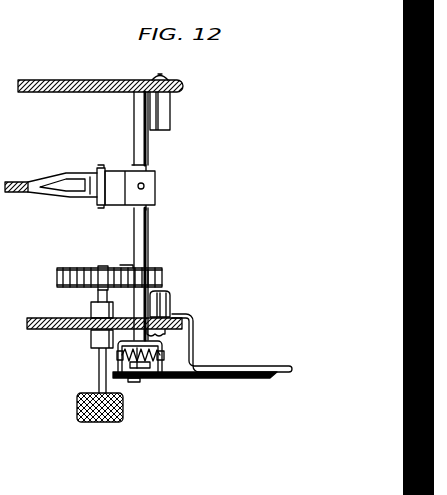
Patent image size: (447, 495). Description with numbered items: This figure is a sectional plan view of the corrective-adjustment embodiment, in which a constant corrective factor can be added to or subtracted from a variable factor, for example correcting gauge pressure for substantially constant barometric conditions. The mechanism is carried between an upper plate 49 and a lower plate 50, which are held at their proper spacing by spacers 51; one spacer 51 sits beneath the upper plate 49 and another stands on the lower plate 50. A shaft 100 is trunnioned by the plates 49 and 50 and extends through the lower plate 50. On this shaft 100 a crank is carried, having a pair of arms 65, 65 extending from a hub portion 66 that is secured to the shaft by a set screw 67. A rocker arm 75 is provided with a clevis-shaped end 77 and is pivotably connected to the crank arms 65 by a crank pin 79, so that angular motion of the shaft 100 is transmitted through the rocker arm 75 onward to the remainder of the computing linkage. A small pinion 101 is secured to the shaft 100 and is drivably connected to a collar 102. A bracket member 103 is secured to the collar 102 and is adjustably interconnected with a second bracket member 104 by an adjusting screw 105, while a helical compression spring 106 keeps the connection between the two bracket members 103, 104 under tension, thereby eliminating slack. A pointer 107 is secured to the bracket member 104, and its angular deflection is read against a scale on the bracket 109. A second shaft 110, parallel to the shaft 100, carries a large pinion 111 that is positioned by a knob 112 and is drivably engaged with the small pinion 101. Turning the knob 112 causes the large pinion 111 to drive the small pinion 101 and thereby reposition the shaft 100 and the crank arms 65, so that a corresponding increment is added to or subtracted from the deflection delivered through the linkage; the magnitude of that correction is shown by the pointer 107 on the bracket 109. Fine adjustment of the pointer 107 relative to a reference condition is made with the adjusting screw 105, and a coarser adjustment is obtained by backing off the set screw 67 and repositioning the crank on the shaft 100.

The plate 49 is at (57, 79).
The plate 50 is at (50, 331).
The spacer 51 is at (163, 113).
The crank arm 65 is at (116, 170).
The hub portion 66 is at (157, 178).
The set screw 67 is at (144, 187).
The rocker arm 75 is at (15, 181).
The clevis-shaped end 77 is at (77, 176).
The crank pin 79 is at (92, 195).
The shaft 100 is at (148, 245).
The small pinion 101 is at (162, 272).
The collar 102 is at (157, 373).
The bracket member 103 is at (162, 343).
The bracket member 104 is at (120, 357).
The adjusting screw 105 is at (175, 373).
The helical compression spring 106 is at (150, 373).
The pointer 107 is at (222, 378).
The bracket 109 is at (193, 352).
The shaft 110 is at (98, 368).
The large pinion 111 is at (74, 268).
The knob 112 is at (95, 423).